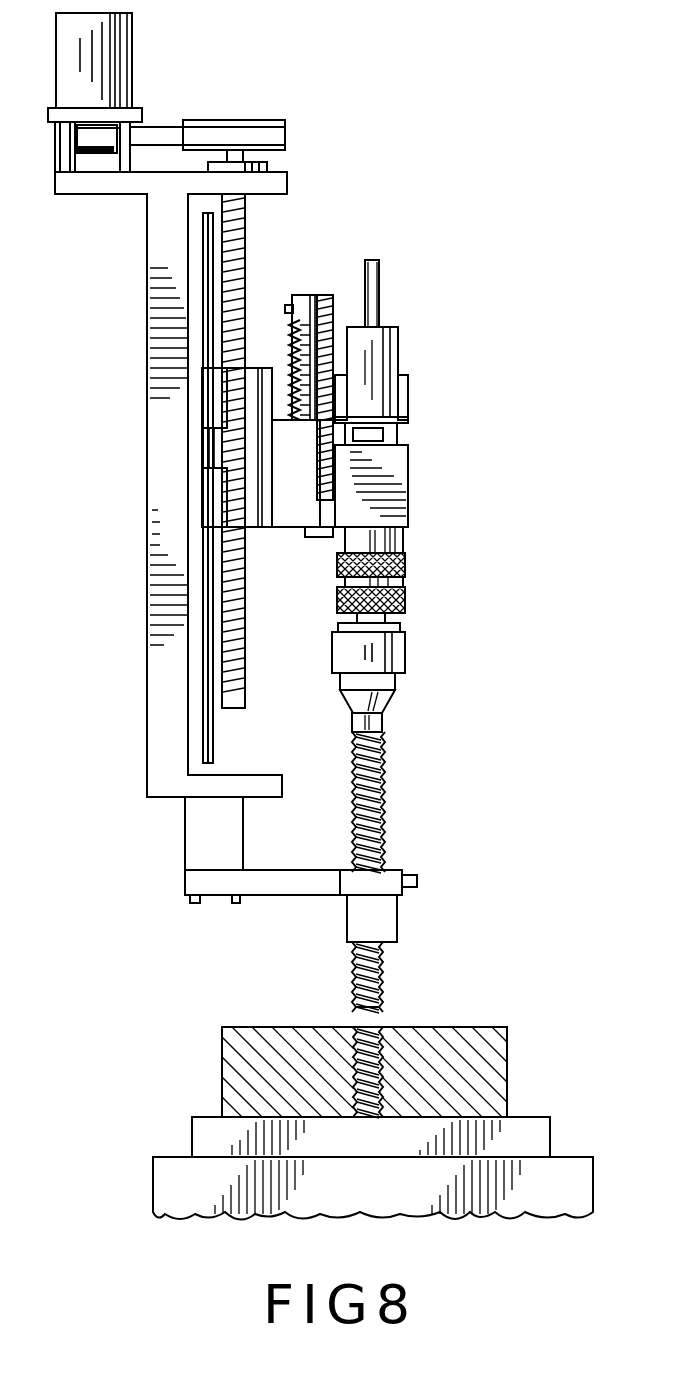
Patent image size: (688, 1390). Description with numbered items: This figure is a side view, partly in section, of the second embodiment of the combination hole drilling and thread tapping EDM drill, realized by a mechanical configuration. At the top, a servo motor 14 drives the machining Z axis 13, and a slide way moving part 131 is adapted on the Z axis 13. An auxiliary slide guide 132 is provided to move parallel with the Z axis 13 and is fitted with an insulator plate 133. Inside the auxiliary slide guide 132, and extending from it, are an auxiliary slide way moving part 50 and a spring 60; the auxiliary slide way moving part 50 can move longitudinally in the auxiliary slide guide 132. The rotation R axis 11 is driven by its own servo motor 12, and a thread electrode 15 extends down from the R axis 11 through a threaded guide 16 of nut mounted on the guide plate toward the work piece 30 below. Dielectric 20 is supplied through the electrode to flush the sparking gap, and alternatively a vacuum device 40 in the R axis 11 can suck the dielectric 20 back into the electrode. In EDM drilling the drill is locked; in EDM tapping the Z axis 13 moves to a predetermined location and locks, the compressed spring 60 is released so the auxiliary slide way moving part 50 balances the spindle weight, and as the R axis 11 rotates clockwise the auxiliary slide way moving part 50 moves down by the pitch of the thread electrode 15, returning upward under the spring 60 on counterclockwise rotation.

The servo motor 14 is at (117, 50).
The Z axis 13 is at (223, 262).
The slide way moving part 131 is at (228, 449).
The auxiliary slide guide 132 is at (293, 517).
The insulator plate 133 is at (263, 500).
The spring 60 is at (290, 330).
The dielectric 20 is at (372, 258).
The vacuum device 40 is at (410, 241).
The auxiliary slide way moving part 50 is at (330, 308).
The servo motor 12 is at (378, 362).
The R axis 11 is at (403, 535).
The thread electrode 15 is at (385, 822).
The guide 16 is at (383, 925).
The work piece 30 is at (475, 1045).